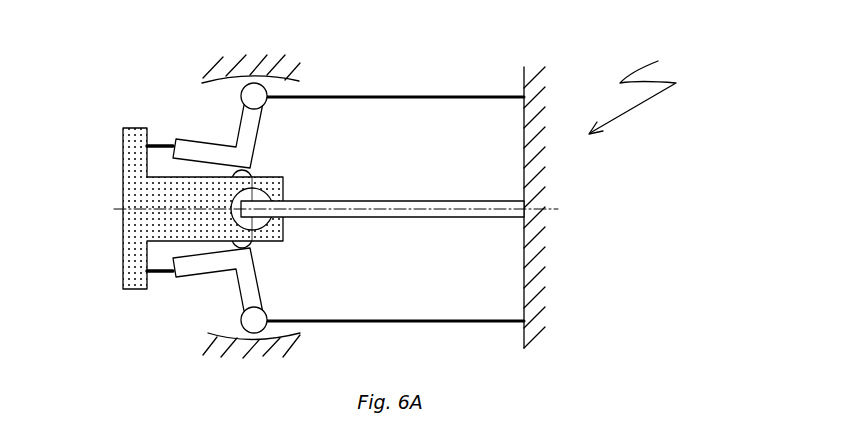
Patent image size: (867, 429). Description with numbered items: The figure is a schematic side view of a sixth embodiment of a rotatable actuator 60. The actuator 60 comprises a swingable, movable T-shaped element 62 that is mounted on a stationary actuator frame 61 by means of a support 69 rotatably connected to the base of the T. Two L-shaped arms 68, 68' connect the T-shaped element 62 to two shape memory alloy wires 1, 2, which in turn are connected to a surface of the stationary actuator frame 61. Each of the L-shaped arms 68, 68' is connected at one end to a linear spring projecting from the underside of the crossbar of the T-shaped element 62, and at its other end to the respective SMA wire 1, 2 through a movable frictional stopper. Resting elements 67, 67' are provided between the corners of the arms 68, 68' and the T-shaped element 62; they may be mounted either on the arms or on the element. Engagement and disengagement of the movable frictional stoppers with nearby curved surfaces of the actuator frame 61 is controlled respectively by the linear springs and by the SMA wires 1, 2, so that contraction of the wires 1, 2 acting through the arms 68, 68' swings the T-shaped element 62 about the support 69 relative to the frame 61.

The shape memory alloy wire 1 is at (410, 96).
The shape memory alloy wire 2 is at (482, 322).
The actuator 60 is at (649, 87).
The stationary actuator frame 61 is at (222, 79).
The T-shaped element 62 is at (127, 192).
The resting element 67 is at (267, 129).
The resting element 67' is at (278, 290).
The L-shaped arm 68 is at (160, 116).
The L-shaped arm 68' is at (139, 314).
The support 69 is at (484, 210).